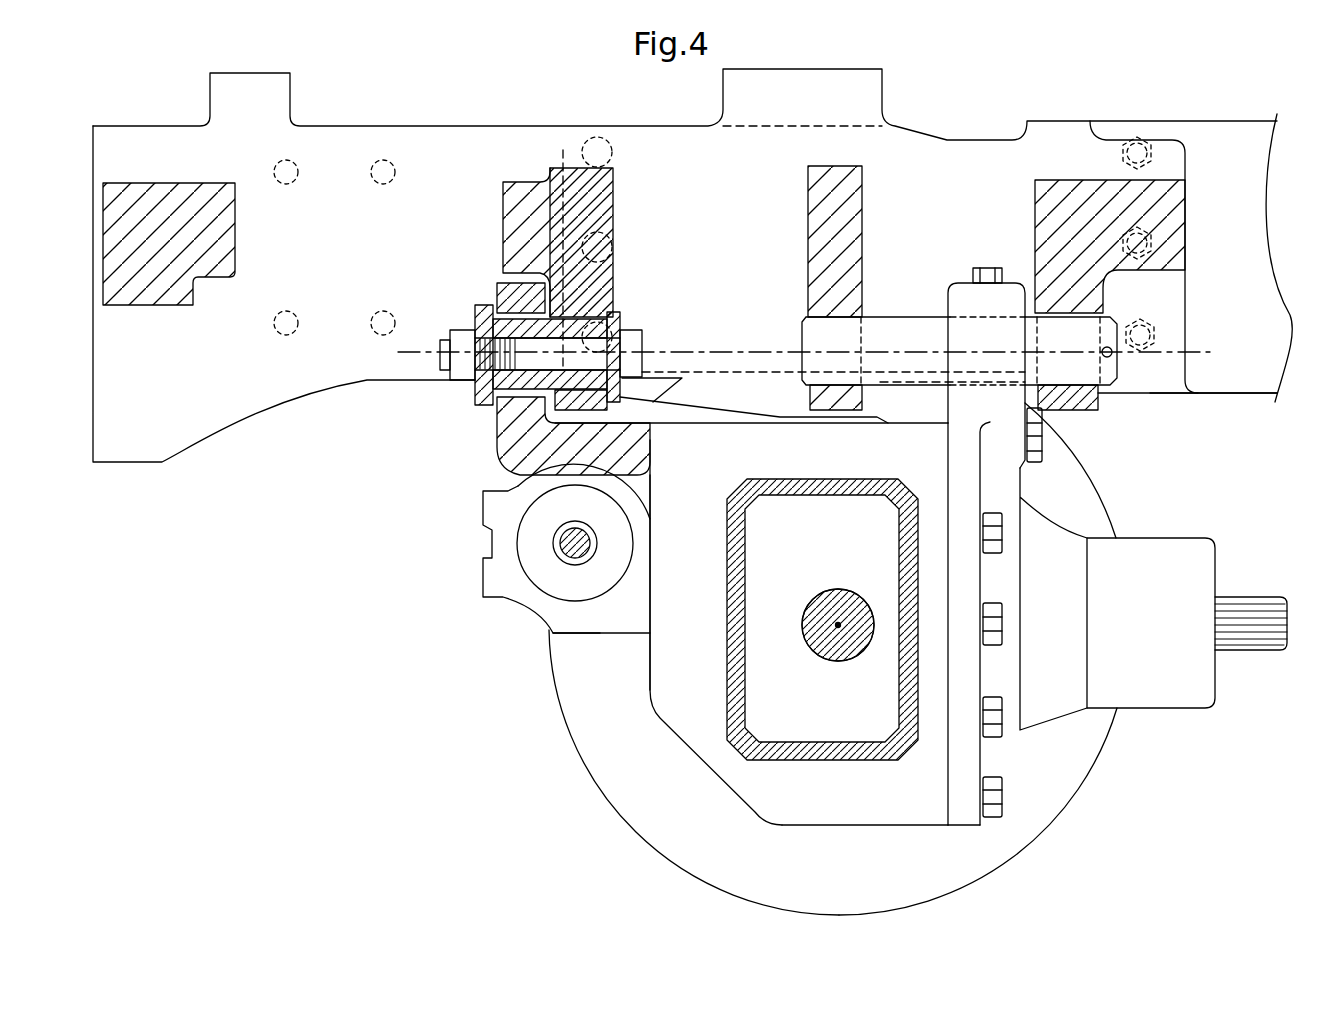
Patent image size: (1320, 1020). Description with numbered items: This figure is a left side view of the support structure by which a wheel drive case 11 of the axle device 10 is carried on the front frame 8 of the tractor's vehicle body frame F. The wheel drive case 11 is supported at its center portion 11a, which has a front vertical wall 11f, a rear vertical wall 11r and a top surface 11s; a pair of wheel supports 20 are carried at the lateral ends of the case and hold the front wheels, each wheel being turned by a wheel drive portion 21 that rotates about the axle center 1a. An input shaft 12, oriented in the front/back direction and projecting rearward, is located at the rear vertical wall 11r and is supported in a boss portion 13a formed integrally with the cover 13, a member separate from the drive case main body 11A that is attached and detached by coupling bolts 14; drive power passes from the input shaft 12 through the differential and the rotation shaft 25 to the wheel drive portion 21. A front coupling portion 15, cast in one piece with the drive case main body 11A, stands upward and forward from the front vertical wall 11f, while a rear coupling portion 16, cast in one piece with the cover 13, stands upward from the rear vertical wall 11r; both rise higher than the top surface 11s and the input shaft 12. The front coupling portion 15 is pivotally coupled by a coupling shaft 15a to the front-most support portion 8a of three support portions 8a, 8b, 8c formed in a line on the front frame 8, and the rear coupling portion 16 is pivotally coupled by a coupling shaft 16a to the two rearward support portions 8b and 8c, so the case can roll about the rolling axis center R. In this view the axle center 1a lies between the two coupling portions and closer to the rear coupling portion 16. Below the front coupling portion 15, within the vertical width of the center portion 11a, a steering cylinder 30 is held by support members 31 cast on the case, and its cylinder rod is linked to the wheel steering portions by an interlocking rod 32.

The axle center 1a is at (840, 652).
The front frame 8 is at (332, 378).
The front-most support portion 8a is at (507, 208).
The support portion 8b is at (815, 194).
The support portion 8c is at (1043, 197).
The axle device 10 is at (437, 600).
The wheel drive case 11 is at (791, 619).
The drive case main body 11A is at (726, 580).
The center portion 11a is at (832, 790).
The front vertical wall 11f is at (650, 663).
The rear vertical wall 11r is at (950, 748).
The top surface 11s is at (697, 423).
The input shaft 12 is at (1268, 641).
The cover 13 is at (1010, 480).
The boss portion 13a is at (1183, 548).
The coupling bolts 14 is at (994, 622).
The front coupling portion 15 is at (503, 430).
The coupling shaft 15a is at (490, 318).
The rear coupling portion 16 is at (953, 300).
The coupling shaft 16a is at (820, 331).
The wheel support 20 is at (600, 795).
The wheel drive portion 21 is at (985, 872).
The rotation shaft 25 is at (838, 608).
The steering cylinder 30 is at (547, 511).
The support members 31 is at (527, 606).
The interlocking rod 32 is at (563, 543).
The rolling axis center R is at (815, 353).
The vehicle body frame F is at (1210, 393).